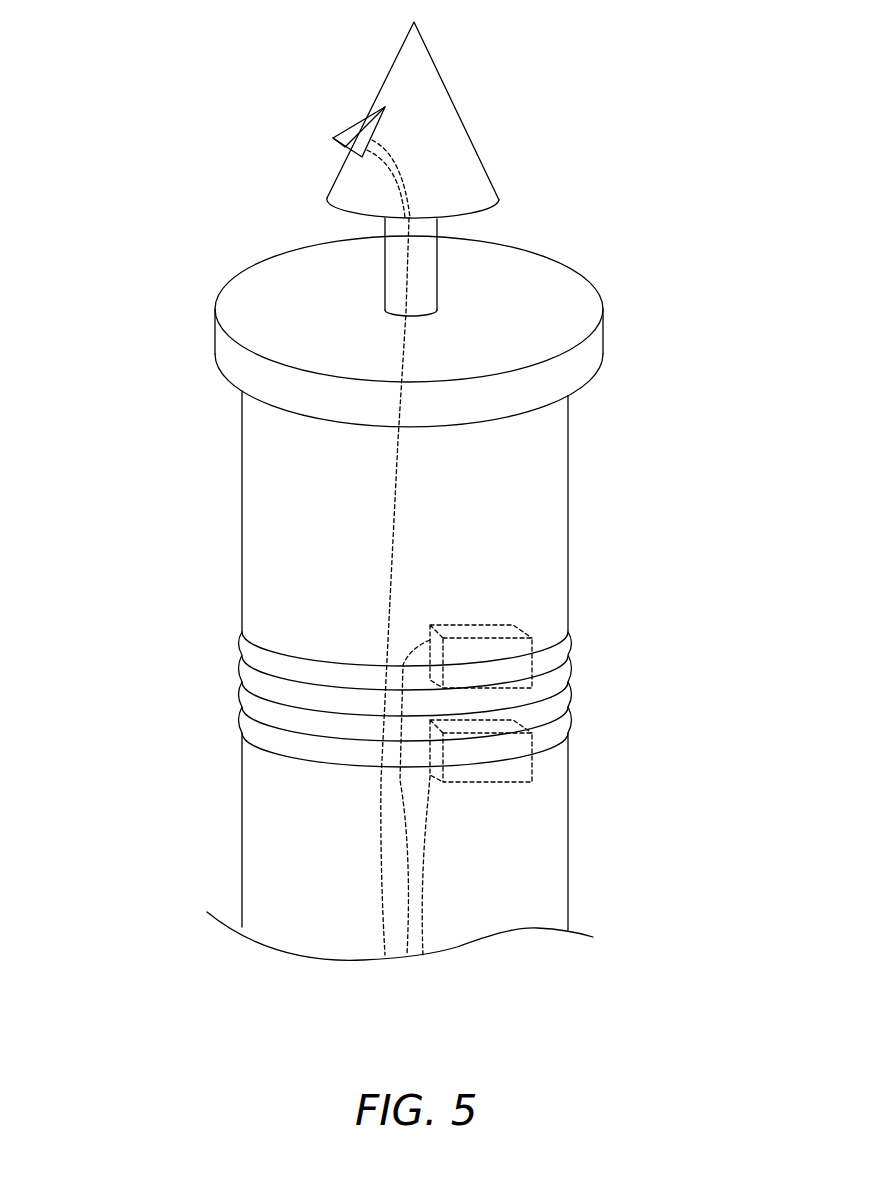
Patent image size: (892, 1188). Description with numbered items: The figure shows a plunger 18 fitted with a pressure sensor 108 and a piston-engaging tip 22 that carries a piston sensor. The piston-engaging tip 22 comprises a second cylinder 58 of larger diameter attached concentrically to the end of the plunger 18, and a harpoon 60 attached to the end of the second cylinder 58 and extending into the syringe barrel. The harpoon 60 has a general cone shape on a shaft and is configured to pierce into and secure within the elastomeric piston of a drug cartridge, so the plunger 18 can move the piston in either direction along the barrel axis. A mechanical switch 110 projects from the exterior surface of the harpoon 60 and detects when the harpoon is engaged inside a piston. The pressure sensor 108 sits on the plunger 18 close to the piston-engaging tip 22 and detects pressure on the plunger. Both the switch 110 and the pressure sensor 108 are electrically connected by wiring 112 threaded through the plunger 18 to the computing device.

The piston-engaging tip 22 is at (655, 214).
The plunger 18 is at (226, 532).
The second cylinder 58 is at (593, 351).
The harpoon 60 is at (448, 128).
The mechanical switch 110 is at (343, 138).
The pressure sensor 108 is at (533, 765).
The wiring 112 is at (398, 536).